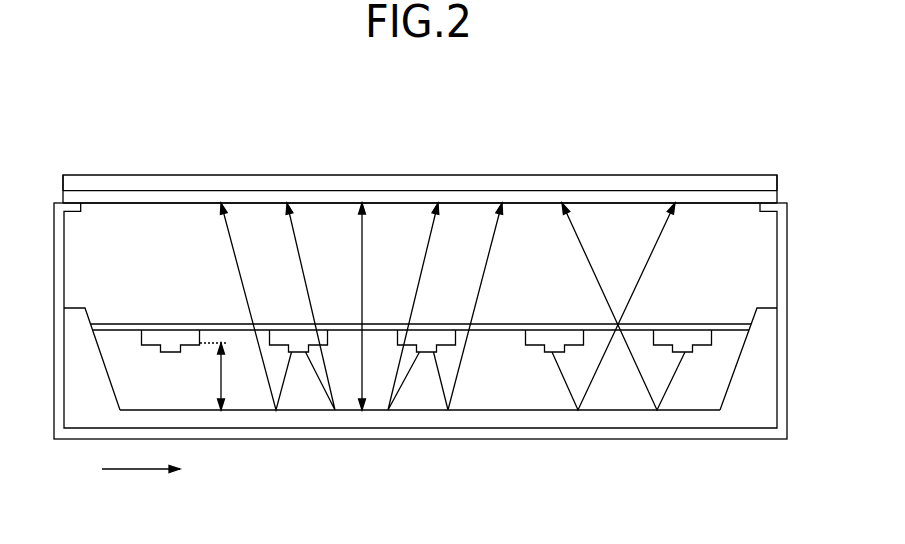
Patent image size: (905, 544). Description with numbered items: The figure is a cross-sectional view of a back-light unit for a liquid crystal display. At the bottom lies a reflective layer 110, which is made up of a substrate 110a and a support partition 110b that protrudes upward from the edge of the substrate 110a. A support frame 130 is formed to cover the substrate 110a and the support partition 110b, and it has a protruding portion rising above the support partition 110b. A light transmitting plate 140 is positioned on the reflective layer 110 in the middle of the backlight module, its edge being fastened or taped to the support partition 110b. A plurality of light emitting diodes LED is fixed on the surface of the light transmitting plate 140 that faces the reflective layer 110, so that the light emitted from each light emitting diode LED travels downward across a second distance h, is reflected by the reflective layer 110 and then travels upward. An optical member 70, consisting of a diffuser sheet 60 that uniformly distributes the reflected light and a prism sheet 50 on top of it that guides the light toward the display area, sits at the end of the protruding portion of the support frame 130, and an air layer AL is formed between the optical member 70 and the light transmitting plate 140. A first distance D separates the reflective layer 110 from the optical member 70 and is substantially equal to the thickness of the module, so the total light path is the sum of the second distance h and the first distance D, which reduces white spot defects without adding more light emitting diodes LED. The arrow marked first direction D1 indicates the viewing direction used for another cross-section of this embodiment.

The optical member 70 is at (420, 144).
The prism sheet 50 is at (209, 175).
The diffuser sheet 60 is at (245, 197).
The air layer AL is at (613, 230).
The element light is at (233, 253).
The light emitting diode LED is at (280, 338).
The first distance D is at (364, 248).
The light transmitting plate 140 is at (512, 328).
The second distance h is at (224, 377).
The support frame 130 is at (542, 432).
The substrate 110a is at (683, 418).
The support partition 110b is at (752, 403).
The reflective layer 110 is at (420, 416).
The first direction D1 is at (138, 471).